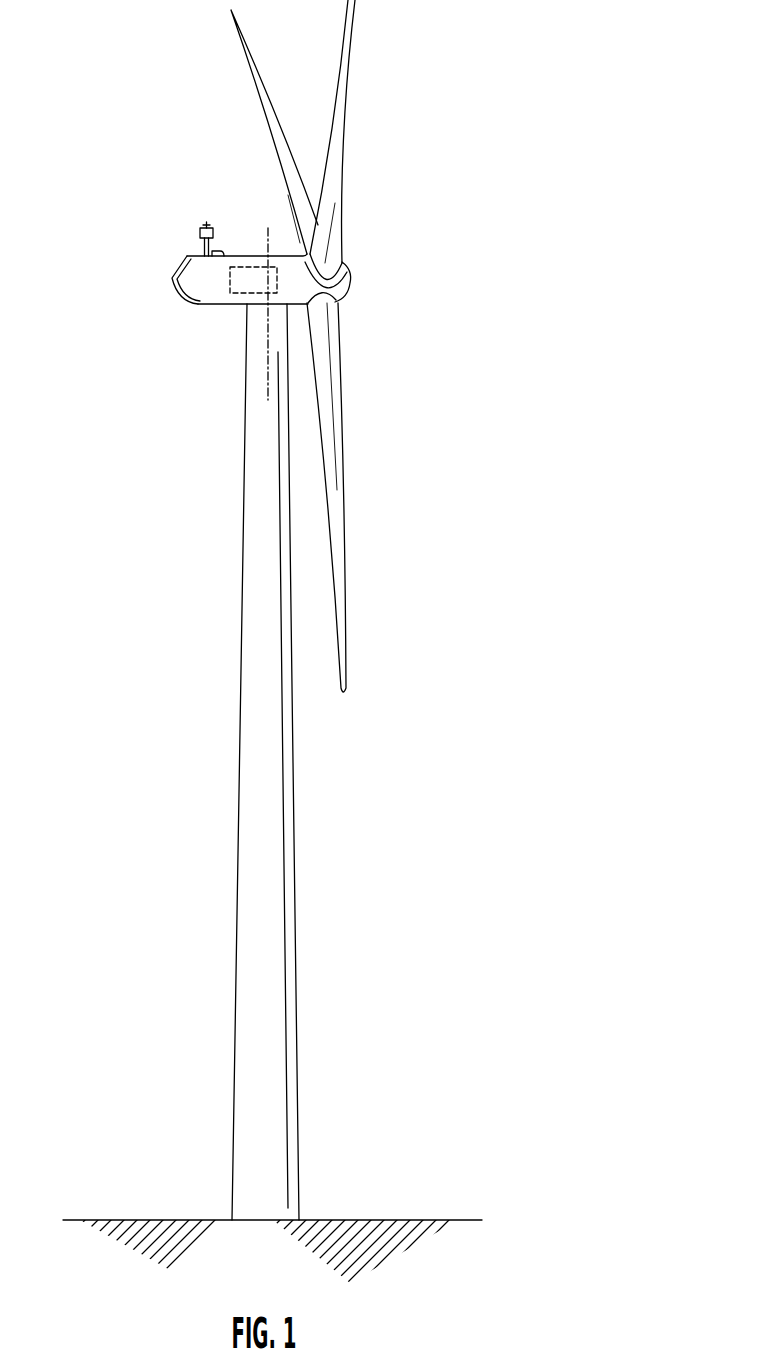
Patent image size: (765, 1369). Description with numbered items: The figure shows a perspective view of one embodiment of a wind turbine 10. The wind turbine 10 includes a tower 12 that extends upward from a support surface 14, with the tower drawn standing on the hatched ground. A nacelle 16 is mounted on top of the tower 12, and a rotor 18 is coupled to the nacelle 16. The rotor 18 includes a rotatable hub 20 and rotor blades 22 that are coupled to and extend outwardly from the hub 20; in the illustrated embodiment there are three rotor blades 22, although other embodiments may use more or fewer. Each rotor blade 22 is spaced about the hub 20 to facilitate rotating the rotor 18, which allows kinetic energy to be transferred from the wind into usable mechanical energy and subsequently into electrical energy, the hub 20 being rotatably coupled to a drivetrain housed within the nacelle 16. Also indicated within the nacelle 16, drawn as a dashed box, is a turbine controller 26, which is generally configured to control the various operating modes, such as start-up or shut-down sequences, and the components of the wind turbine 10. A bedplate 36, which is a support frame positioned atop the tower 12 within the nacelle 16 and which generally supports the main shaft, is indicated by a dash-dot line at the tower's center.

The wind turbine 10 is at (457, 78).
The tower 12 is at (250, 887).
The support surface 14 is at (150, 1220).
The nacelle 16 is at (218, 305).
The rotor 18 is at (357, 249).
The rotatable hub 20 is at (348, 282).
The rotor blade 22 is at (333, 118).
The turbine controller 26 is at (253, 256).
The bedplate 36 is at (262, 355).